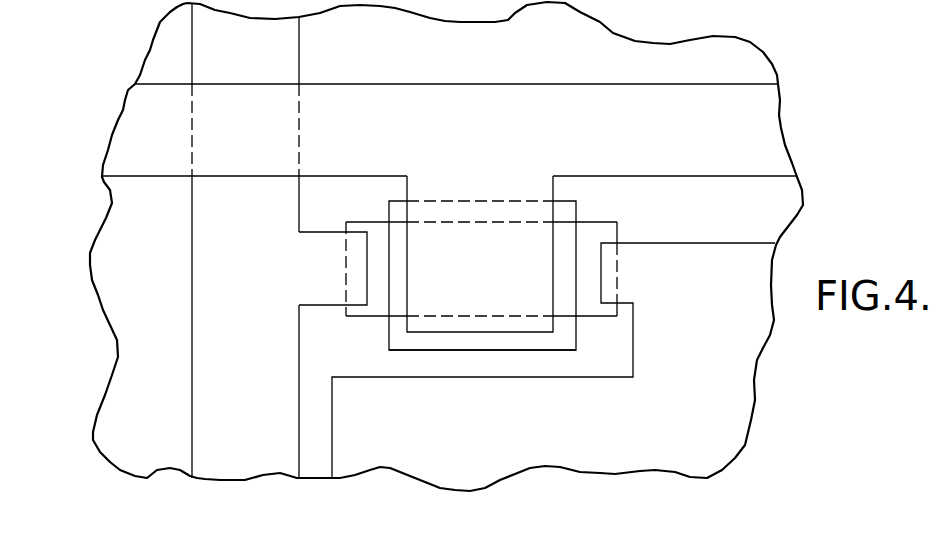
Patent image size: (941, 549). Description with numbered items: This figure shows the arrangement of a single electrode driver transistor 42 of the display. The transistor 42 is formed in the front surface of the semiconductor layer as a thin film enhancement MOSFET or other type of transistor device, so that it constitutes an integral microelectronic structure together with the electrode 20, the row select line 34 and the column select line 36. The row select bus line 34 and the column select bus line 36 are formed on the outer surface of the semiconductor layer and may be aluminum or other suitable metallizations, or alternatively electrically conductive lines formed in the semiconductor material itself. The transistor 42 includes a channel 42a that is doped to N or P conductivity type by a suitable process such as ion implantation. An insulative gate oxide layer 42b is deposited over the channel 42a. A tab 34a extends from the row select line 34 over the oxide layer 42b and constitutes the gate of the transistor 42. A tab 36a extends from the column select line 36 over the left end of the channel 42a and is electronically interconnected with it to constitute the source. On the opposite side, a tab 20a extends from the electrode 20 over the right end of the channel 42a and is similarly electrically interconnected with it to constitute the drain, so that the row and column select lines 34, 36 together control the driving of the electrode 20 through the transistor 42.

The electrode 20 is at (728, 360).
The tab 20a is at (601, 257).
The row select bus line 34 is at (158, 84).
The tab 34a is at (520, 332).
The column select bus line 36 is at (300, 52).
The tab 36a is at (318, 232).
The electrode driver transistor 42 is at (519, 164).
The channel 42a is at (372, 318).
The insulative gate oxide layer 42b is at (438, 350).